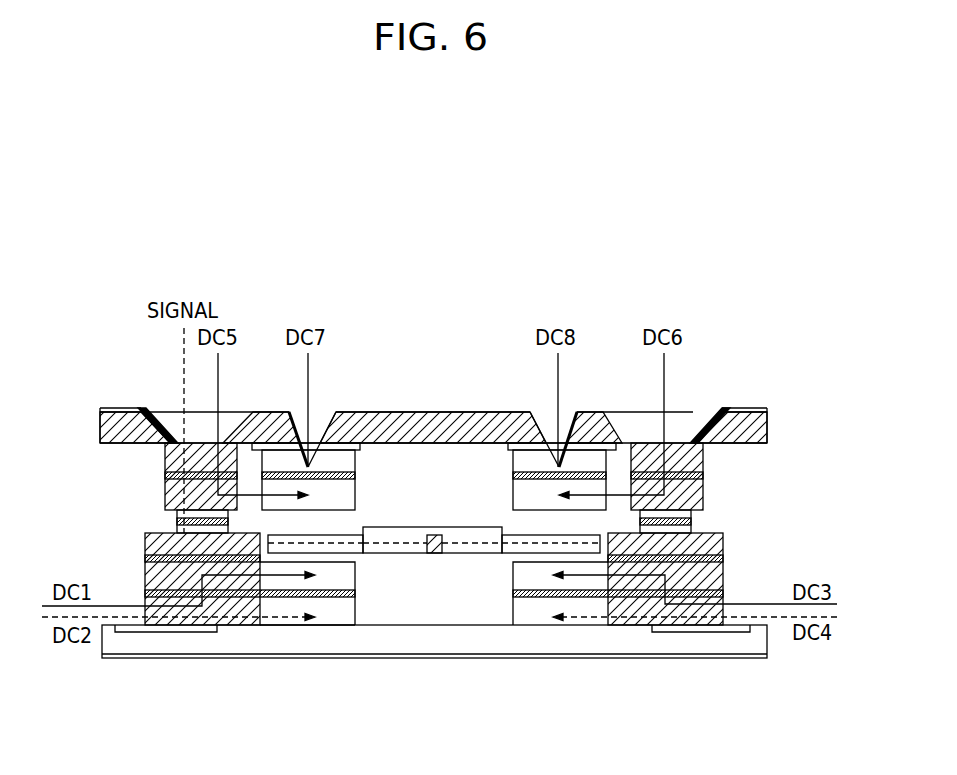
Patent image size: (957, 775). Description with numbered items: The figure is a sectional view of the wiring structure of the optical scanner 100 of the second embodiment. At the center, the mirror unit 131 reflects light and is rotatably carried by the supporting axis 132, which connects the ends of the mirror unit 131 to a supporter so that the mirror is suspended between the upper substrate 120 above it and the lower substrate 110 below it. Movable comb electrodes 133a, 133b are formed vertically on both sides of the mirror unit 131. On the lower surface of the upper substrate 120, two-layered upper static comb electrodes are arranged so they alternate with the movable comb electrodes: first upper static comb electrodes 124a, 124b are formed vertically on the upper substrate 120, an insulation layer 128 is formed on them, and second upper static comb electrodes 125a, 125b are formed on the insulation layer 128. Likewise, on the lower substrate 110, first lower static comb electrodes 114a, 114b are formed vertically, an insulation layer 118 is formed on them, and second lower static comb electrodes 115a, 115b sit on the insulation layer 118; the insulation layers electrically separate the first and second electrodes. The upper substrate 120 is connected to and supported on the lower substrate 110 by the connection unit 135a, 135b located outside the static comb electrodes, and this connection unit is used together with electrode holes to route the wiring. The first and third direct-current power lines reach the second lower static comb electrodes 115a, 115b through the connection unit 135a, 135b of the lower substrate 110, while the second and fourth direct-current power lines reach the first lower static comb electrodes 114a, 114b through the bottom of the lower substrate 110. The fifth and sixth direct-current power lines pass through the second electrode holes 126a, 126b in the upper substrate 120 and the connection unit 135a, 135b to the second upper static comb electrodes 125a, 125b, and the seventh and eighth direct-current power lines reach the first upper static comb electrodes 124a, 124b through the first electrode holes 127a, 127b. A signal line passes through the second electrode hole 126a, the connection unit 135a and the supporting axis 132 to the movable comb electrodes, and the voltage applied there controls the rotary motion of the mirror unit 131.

The optical scanner 100 is at (450, 705).
The lower substrate 110 is at (755, 642).
The first lower static comb electrode 114a is at (333, 610).
The first lower static comb electrode 114b is at (578, 610).
The second lower static comb electrode 115a is at (277, 575).
The second lower static comb electrode 115b is at (538, 580).
The insulation layer 118 is at (294, 598).
The upper substrate 120 is at (757, 432).
The first upper static comb electrode 124a is at (328, 460).
The first upper static comb electrode 124b is at (540, 460).
The second upper static comb electrode 125a is at (323, 493).
The second upper static comb electrode 125b is at (545, 493).
The second electrode hole 126a is at (172, 414).
The second electrode hole 126b is at (713, 413).
The first electrode hole 127a is at (251, 414).
The first electrode hole 127b is at (577, 412).
The insulation layer 128 is at (338, 484).
The mirror unit 131 is at (440, 527).
The supporting axis 132 is at (428, 553).
The movable comb electrode 133a is at (352, 533).
The movable comb electrode 133b is at (513, 543).
The connection unit 135a is at (147, 513).
The connection unit 135b is at (723, 513).